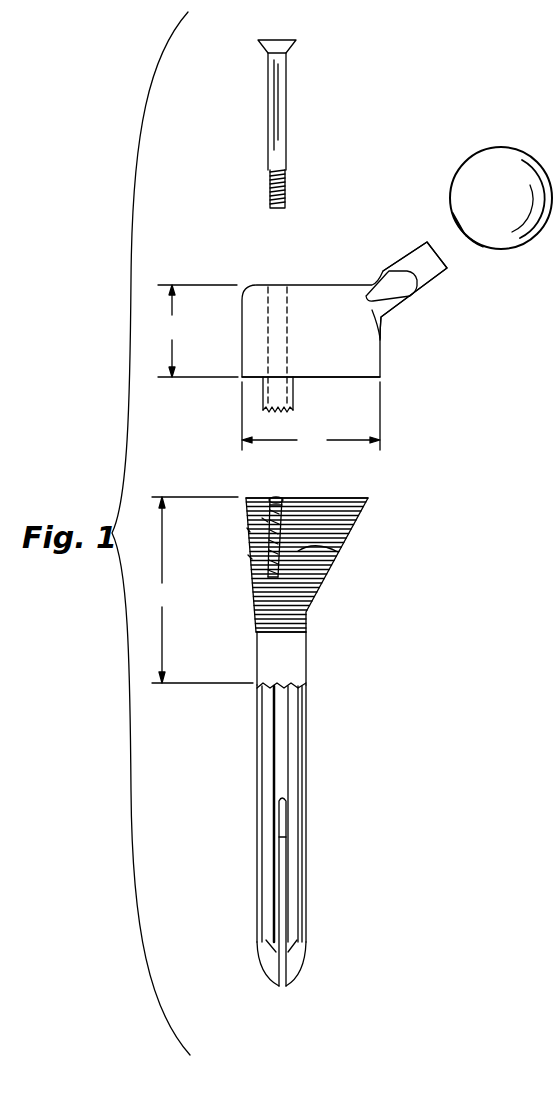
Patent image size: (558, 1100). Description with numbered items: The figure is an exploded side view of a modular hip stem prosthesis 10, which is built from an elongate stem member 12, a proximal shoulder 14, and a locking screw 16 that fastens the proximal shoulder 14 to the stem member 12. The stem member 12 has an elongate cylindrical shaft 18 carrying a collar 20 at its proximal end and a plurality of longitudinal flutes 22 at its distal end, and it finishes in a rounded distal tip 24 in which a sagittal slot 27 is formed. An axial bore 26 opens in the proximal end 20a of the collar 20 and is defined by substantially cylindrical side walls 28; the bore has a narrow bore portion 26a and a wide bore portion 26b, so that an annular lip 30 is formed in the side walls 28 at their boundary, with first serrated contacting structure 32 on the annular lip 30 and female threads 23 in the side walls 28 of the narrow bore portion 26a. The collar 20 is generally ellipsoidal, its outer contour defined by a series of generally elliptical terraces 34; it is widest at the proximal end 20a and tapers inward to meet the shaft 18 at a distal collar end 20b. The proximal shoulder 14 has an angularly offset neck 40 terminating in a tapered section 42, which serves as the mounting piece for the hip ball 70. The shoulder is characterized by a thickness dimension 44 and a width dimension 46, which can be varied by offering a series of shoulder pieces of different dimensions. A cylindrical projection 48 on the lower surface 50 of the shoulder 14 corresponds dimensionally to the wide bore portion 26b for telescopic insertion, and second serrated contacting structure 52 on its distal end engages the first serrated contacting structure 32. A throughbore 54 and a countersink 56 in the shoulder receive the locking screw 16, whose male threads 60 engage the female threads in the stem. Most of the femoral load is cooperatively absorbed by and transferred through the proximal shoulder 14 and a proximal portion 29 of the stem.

The modular hip stem prosthesis 10 is at (356, 58).
The elongate stem member 12 is at (340, 605).
The proximal shoulder 14 is at (382, 362).
The locking screw 16 is at (288, 106).
The cylindrical shaft 18 is at (255, 652).
The collar 20 is at (362, 518).
The proximal end of the collar 20a is at (345, 497).
The distal collar end 20b is at (307, 630).
The longitudinal flutes 22 is at (293, 742).
The female threads 23 is at (248, 557).
The distal tip 24 is at (300, 968).
The axial bore 26 is at (283, 497).
The narrow bore portion 26a is at (250, 580).
The wide bore portion 26b is at (280, 515).
The sagittal slot 27 is at (281, 975).
The cylindrical side walls 28 is at (275, 498).
The proximal portion 29 is at (202, 590).
The annular lip 30 is at (247, 530).
The first serrated contacting structure 32 is at (262, 520).
The elliptical terraces 34 is at (343, 548).
The angularly offset neck 40 is at (384, 317).
The tapered section 42 is at (431, 273).
The thickness dimension 44 is at (198, 331).
The width dimension 46 is at (311, 416).
The cylindrical projection 48 is at (295, 393).
The lower surface 50 is at (360, 380).
The second serrated contacting structure 52 is at (270, 415).
The throughbore 54 is at (280, 312).
The countersink 56 is at (267, 292).
The male threads 60 is at (286, 193).
The hip ball 70 is at (487, 163).